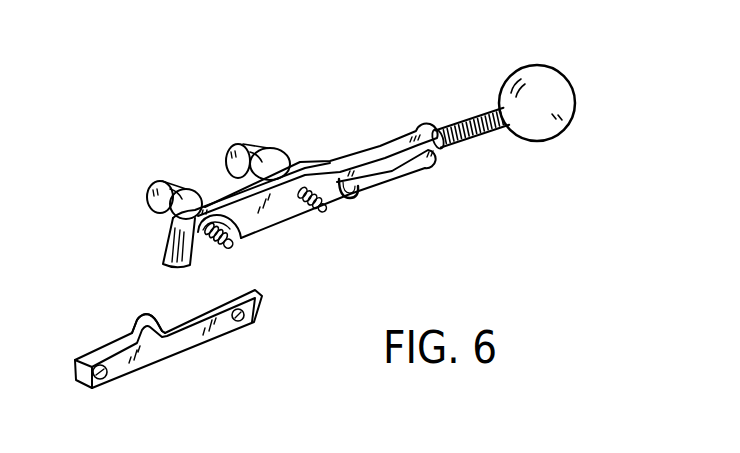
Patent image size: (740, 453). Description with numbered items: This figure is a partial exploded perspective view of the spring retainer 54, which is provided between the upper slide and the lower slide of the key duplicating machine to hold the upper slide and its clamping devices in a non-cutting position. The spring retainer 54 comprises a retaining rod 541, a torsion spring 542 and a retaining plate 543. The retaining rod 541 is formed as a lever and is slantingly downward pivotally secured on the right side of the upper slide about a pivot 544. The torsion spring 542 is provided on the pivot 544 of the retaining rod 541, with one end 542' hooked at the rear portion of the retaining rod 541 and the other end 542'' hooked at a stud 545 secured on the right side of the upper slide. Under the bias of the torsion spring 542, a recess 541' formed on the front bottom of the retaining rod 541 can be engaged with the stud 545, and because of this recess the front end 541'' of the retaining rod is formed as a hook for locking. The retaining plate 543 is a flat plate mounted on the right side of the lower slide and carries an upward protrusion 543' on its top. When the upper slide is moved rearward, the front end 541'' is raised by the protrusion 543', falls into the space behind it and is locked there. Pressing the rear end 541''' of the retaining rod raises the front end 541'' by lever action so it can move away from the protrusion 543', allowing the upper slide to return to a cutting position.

The spring retainer 54 is at (432, 127).
The retaining rod 541 is at (305, 161).
The recess 541' is at (200, 263).
The front end of the retaining rod 541'' is at (136, 272).
The rear end of the retaining rod 541''' is at (575, 81).
The torsion spring 542 is at (317, 153).
The one end of the torsion spring 542' is at (371, 211).
The other end of the torsion spring 542'' is at (126, 200).
The retaining plate 543 is at (146, 367).
The upward protrusion 543' is at (200, 357).
The pivot 544 is at (234, 146).
The stud 545 is at (221, 252).